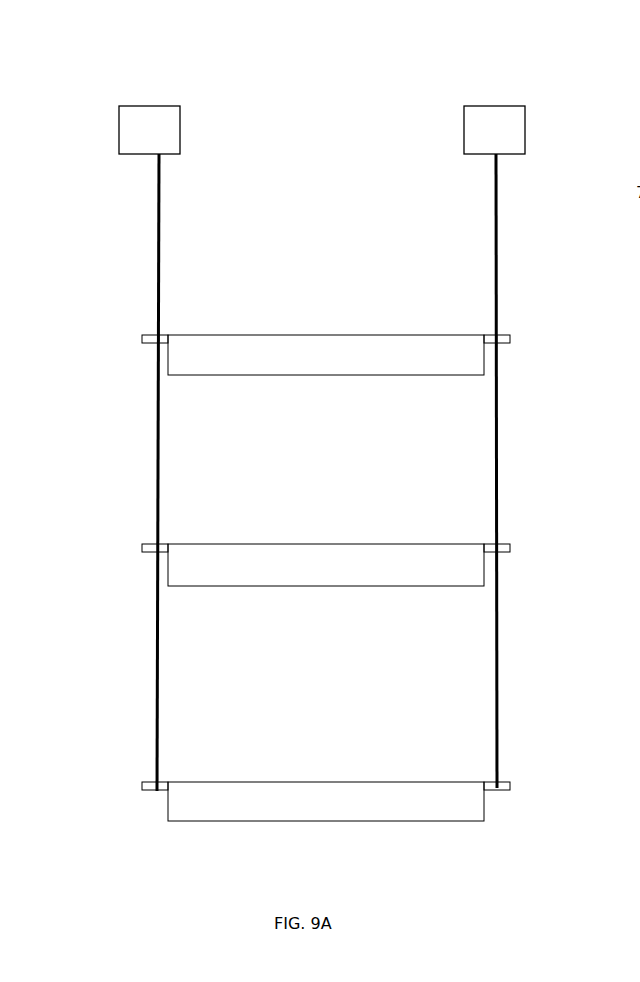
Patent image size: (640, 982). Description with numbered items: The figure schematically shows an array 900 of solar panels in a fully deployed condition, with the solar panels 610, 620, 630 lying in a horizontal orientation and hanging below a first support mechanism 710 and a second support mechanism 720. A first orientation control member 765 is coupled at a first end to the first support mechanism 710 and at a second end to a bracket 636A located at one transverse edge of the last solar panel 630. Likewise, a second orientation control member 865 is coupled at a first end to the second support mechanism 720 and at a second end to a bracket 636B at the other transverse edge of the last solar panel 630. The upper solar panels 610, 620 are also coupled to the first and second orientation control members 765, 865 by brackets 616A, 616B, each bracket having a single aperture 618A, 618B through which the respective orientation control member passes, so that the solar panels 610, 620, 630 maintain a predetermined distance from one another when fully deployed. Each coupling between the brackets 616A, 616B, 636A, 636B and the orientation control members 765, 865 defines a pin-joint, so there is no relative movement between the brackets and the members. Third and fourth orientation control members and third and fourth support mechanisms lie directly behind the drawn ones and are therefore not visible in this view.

The array 900 is at (306, 96).
The second support mechanism 720 is at (119, 138).
The first support mechanism 710 is at (525, 131).
The second orientation control member 865 is at (160, 226).
The first orientation control member 765 is at (496, 222).
The solar panel 610 is at (255, 352).
The solar panel 620 is at (247, 560).
The last solar panel 630 is at (247, 795).
The bracket 616B is at (142, 338).
The bracket 616A is at (510, 338).
The aperture 618B is at (155, 333).
The aperture 618A is at (499, 333).
The bracket 636B is at (142, 786).
The bracket 636A is at (510, 786).